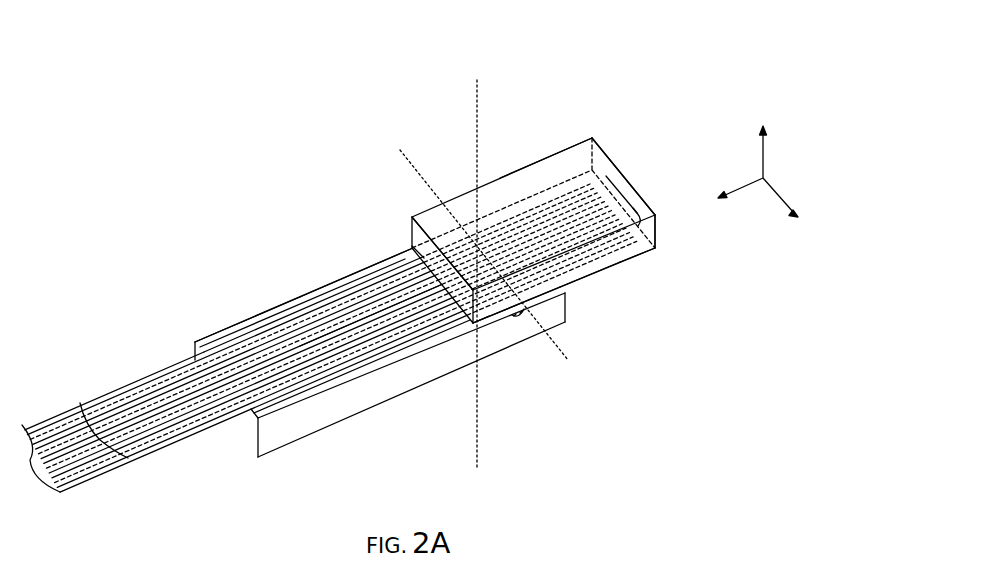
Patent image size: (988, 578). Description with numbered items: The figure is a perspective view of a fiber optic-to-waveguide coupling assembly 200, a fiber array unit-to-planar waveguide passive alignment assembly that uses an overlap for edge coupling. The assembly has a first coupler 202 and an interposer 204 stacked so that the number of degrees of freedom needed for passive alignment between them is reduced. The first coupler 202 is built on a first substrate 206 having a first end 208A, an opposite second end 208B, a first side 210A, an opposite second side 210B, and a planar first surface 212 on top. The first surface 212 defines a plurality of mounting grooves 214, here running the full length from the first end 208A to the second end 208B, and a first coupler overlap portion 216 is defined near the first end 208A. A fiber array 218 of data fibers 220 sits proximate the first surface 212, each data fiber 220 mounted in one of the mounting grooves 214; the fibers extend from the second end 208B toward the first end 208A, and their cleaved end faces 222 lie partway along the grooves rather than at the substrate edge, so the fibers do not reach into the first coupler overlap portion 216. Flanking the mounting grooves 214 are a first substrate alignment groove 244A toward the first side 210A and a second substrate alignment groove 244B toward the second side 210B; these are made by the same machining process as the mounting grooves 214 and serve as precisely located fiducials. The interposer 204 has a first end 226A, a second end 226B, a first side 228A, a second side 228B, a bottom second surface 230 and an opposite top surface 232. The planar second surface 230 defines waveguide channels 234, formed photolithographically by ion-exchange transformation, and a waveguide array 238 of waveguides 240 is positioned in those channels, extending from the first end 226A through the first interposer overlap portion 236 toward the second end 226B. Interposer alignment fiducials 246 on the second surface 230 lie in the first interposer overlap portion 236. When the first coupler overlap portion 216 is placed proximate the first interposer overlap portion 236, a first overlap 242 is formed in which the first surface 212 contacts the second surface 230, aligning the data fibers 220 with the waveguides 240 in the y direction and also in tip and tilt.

The fiber optic-to-waveguide coupling assembly 200 is at (620, 42).
The first coupler 202 is at (242, 316).
The interposer 204 is at (553, 151).
The first substrate 206 is at (348, 283).
The first end 208A is at (567, 310).
The second end 208B is at (248, 431).
The first side 210A is at (260, 320).
The second side 210B is at (289, 431).
The first surface 212 is at (393, 263).
The mounting grooves 214 is at (410, 335).
The first coupler overlap portion 216 is at (528, 318).
The fiber array 218 is at (73, 438).
The data fibers 220 is at (135, 398).
The end faces 222 is at (488, 305).
The first end 226A is at (415, 232).
The second end 226B is at (612, 168).
The first side 228A is at (625, 247).
The second side 228B is at (563, 148).
The second surface 230 is at (607, 276).
The top surface 232 is at (581, 160).
The waveguide channels 234 is at (633, 262).
The first interposer overlap portion 236 is at (515, 315).
The waveguide array 238 is at (633, 206).
The waveguides 240 is at (575, 262).
The first overlap 242 is at (521, 312).
The first substrate alignment groove 244A is at (327, 300).
The second substrate alignment groove 244B is at (296, 393).
The interposer alignment fiducials 246 is at (500, 227).